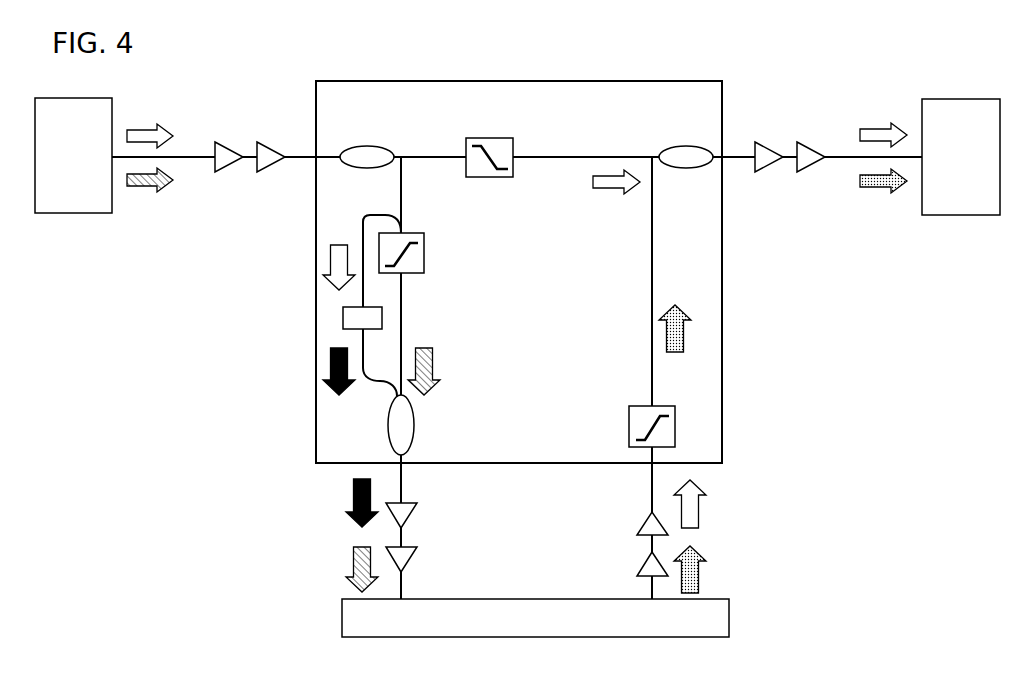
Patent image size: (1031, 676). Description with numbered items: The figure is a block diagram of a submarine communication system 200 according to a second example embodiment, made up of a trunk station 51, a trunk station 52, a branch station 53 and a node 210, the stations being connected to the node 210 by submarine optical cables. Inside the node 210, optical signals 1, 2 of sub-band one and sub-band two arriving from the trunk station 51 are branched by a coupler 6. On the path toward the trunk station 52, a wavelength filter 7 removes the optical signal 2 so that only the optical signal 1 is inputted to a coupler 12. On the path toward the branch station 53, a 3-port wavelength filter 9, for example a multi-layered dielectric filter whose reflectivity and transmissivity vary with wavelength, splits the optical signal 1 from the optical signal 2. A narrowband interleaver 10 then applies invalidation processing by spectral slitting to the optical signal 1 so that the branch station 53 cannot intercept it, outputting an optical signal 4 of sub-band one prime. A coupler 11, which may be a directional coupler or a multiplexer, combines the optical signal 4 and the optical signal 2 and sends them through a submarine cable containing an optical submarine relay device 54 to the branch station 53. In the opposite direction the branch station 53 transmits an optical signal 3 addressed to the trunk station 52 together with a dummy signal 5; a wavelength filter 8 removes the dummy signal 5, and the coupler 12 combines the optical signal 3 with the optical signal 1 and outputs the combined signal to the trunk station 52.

The optical signal 1 is at (135, 120).
The optical signal 2 is at (137, 194).
The optical signal 3 is at (868, 196).
The optical signal 4 is at (323, 371).
The dummy signal 5 is at (706, 513).
The coupler 6 is at (367, 145).
The wavelength filter 7 is at (474, 137).
The wavelength filter 8 is at (675, 427).
The 3-port wavelength filter 9 is at (424, 256).
The narrowband interleaver 10 is at (343, 318).
The coupler 11 is at (414, 424).
The coupler 12 is at (681, 145).
The trunk station 51 is at (60, 214).
The trunk station 52 is at (945, 216).
The branch station 53 is at (730, 602).
The optical submarine relay device 54 is at (638, 518).
The submarine communication system 200 is at (700, 45).
The node 210 is at (722, 290).